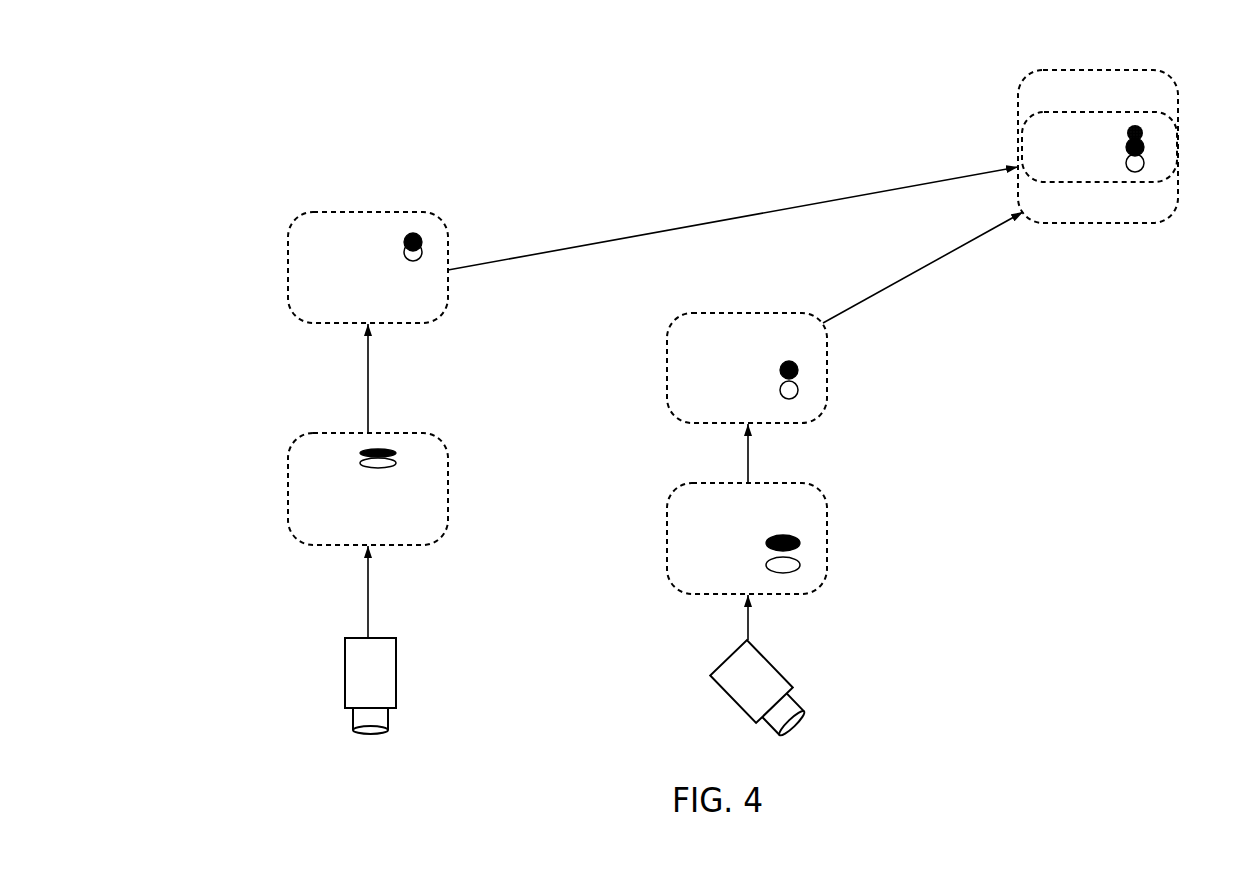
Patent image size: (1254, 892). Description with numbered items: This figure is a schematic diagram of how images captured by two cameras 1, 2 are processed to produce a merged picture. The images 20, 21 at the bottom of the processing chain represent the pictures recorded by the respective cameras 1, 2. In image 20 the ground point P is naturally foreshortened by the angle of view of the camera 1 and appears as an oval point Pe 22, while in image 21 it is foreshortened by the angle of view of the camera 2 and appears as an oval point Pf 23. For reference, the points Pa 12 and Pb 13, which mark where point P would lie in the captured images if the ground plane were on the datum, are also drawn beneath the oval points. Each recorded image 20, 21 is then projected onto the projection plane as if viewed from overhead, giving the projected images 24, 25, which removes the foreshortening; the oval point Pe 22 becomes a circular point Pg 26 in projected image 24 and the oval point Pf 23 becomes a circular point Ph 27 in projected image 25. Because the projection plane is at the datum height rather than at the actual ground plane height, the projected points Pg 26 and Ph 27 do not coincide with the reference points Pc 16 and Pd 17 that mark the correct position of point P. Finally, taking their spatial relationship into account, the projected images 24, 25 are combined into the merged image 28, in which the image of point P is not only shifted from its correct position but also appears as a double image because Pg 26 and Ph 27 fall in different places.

The camera 1 is at (385, 686).
The camera 2 is at (769, 692).
The point Pa 12 is at (396, 463).
The point Pb 13 is at (800, 563).
The point Pc 16 is at (422, 254).
The point Pd 17 is at (798, 388).
The image 20 is at (288, 492).
The image 21 is at (667, 539).
The oval point Pe 22 is at (396, 453).
The oval point Pf 23 is at (800, 541).
The projected image 24 is at (288, 262).
The projected image 25 is at (667, 364).
The circular point Pg 26 is at (421, 239).
The circular point Ph 27 is at (798, 368).
The merged image 28 is at (1178, 160).